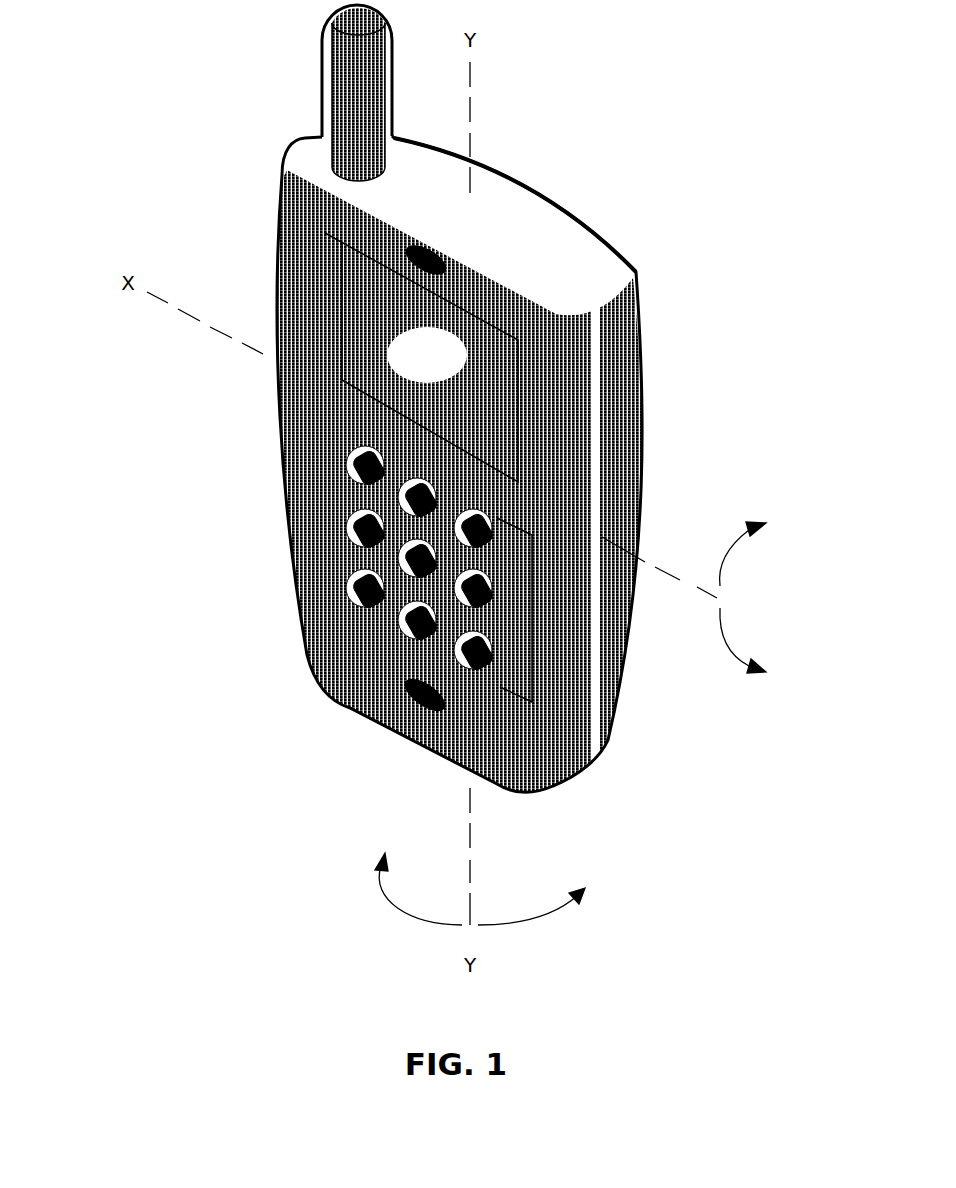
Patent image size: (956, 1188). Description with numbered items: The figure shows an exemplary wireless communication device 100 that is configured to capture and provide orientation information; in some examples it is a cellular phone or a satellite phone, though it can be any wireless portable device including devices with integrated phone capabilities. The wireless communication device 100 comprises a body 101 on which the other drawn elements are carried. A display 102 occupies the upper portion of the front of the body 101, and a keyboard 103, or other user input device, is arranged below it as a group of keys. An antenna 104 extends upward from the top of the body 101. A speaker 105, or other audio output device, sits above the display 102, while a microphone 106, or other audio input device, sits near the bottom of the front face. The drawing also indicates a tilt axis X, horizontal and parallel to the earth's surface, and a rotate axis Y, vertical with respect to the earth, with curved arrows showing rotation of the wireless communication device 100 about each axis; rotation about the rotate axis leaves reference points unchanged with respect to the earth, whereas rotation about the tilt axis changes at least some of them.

The wireless communication device 100 is at (213, 770).
The body 101 is at (640, 405).
The display 102 is at (483, 317).
The keyboard 103 is at (532, 625).
The antenna 104 is at (322, 65).
The speaker 105 is at (437, 252).
The microphone 106 is at (422, 708).